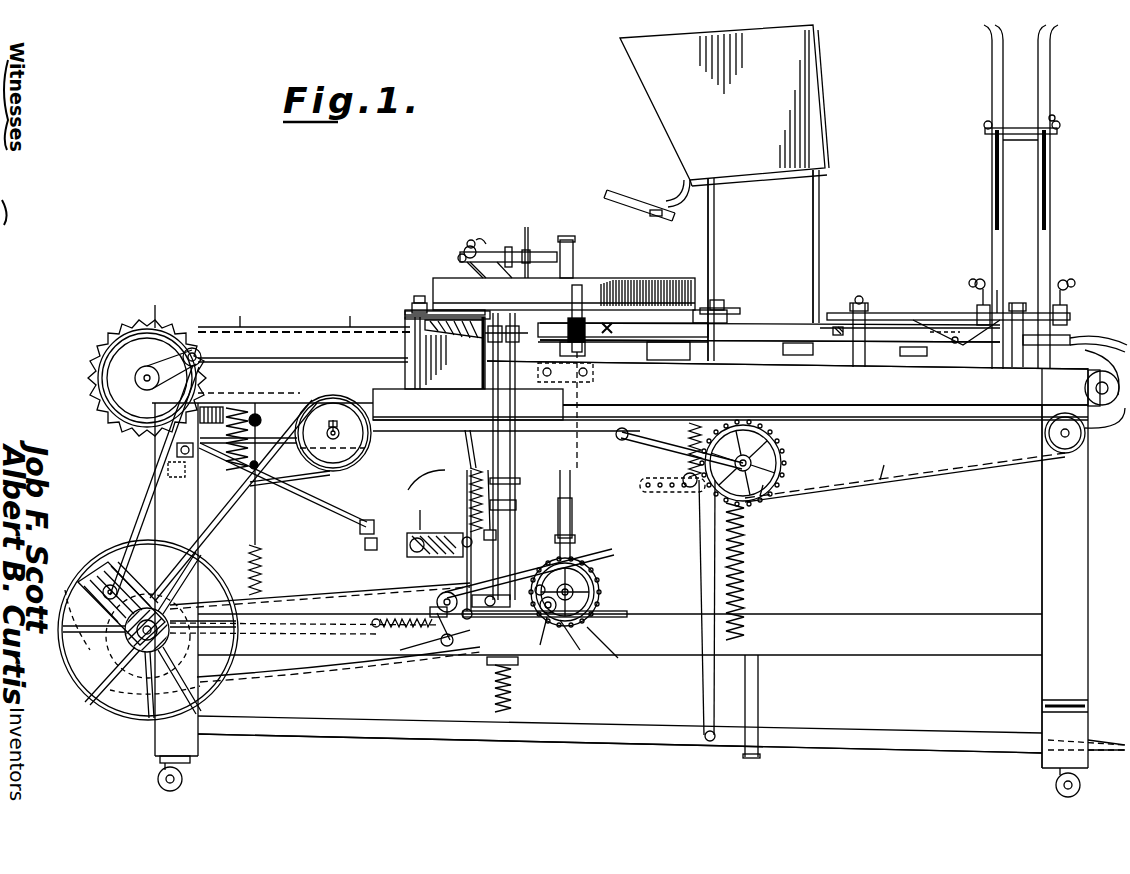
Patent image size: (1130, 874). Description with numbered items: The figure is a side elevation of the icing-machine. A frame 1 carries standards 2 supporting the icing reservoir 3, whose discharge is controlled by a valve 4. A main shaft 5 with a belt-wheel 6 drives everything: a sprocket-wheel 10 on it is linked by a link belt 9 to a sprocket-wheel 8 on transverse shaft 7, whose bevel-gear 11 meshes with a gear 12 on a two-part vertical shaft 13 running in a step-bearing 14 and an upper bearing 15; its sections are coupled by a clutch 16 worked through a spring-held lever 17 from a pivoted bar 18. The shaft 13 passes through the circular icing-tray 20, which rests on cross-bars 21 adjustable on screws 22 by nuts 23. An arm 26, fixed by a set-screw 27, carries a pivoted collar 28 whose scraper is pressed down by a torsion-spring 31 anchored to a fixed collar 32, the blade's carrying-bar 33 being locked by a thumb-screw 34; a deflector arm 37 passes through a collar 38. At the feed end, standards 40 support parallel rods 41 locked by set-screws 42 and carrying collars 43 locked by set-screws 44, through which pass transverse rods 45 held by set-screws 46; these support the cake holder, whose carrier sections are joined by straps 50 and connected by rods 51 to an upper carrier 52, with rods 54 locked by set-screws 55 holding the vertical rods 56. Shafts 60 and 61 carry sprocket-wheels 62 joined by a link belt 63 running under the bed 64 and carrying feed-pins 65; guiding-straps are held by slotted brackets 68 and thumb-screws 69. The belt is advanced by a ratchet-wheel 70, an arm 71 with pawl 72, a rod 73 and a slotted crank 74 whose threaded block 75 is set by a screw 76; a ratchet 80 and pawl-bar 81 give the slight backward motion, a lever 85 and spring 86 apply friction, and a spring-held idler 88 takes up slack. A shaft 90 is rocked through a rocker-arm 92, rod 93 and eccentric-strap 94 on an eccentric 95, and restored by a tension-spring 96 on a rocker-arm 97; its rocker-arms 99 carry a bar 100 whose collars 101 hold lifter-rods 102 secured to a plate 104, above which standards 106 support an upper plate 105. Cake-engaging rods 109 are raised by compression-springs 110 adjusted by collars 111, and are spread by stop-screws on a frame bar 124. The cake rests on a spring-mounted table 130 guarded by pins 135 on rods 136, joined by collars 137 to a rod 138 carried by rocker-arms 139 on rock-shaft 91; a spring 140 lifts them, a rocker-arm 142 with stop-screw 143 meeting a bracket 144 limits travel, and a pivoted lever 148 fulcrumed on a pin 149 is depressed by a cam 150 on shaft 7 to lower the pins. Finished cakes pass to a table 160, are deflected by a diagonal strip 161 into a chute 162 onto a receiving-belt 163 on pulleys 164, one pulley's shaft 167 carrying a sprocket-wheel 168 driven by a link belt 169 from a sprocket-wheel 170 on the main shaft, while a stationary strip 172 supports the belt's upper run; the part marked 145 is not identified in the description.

The frame 1 is at (1070, 556).
The standards 2 is at (714, 243).
The reservoir 3 is at (724, 105).
The valve 4 is at (676, 196).
The shaft 5 is at (125, 648).
The belt-wheel 6 is at (72, 590).
The shaft 7 is at (590, 592).
The sprocket-wheel 8 is at (585, 566).
The link belt 9 is at (306, 600).
The sprocket-wheel 10 is at (146, 606).
The bevel-gear 11 is at (596, 602).
The bevel-gear 12 is at (590, 575).
The two-part shaft 13 is at (574, 524).
The step-bearing 14 is at (613, 653).
The upper bearing 15 is at (583, 378).
The clutch 16 is at (560, 522).
The spring-held lever 17 is at (680, 582).
The pivoted bar 18 is at (603, 733).
The circular tray 20 is at (564, 281).
The cross-bars 21 is at (408, 302).
The screws 22 is at (416, 296).
The nuts 23 is at (408, 312).
The arm 26 is at (460, 256).
The set-screw 27 is at (575, 248).
The collar 28 is at (468, 242).
The torsion-spring 31 is at (496, 252).
The fixed collar 32 is at (526, 248).
The carrying-bar 33 is at (480, 270).
The thumb-screw 34 is at (480, 240).
The arm 37 is at (560, 244).
The collar 38 is at (514, 268).
The standards 40 is at (856, 368).
The parallel rods 41 is at (888, 320).
The set-screws 42 is at (864, 302).
The collars 43 is at (977, 308).
The set-screws 44 is at (1070, 318).
The transverse rods 45 is at (975, 286).
The set-screws 46 is at (972, 279).
The straps 50 is at (1030, 290).
The rods 51 is at (1028, 182).
The upper sectional carrier 52 is at (1012, 134).
The rods 54 is at (980, 127).
The set-screws 55 is at (1054, 118).
The vertical rods 56 is at (1040, 53).
The transverse shaft 60 is at (1086, 388).
The transverse shaft 61 is at (112, 395).
The sprocket-wheels 62 is at (1115, 436).
The link belt 63 is at (916, 470).
The bed or table 64 is at (760, 340).
The pins 65 is at (980, 470).
The slotted brackets 68 is at (608, 334).
The thumb-screws 69 is at (837, 326).
The ratchet-wheel 70 is at (134, 372).
The arm 71 is at (157, 307).
The pawl 72 is at (192, 347).
The rod 73 is at (148, 493).
The crank 74 is at (96, 606).
The threaded block 75 is at (100, 640).
The screw 76 is at (106, 584).
The ratchet 80 is at (112, 420).
The pawl-bar 81 is at (212, 468).
The lever 85 is at (228, 406).
The spring 86 is at (266, 562).
The idler 88 is at (757, 463).
The shaft 90 is at (437, 600).
The rock-shaft 91 is at (422, 554).
The rocker-arm 92 is at (443, 660).
The rod 93 is at (326, 668).
The eccentric-strap 94 is at (80, 680).
The eccentric 95 is at (160, 672).
The tension-spring 96 is at (407, 636).
The rocker-arm 97 is at (396, 617).
The rocker-arms 99 is at (487, 640).
The transversely-disposed bar 100 is at (495, 610).
The collars 101 is at (524, 582).
The lifter-rods 102 is at (529, 570).
The plate 104 is at (550, 536).
The plate 105 is at (453, 360).
The rods or standards 106 is at (504, 345).
The cake-engaging rods 109 is at (515, 448).
The helical compression-springs 110 is at (516, 506).
The collar 111 is at (525, 485).
The bar 124 is at (468, 404).
The cake-receiving table 130 is at (572, 300).
The guard-pins 135 is at (453, 336).
The vertically-disposed rods 136 is at (470, 448).
The collars 137 is at (486, 510).
The transverse rod 138 is at (484, 533).
The rocker-arms 139 is at (408, 490).
The spring 140 is at (470, 494).
The rocker-arm 142 is at (418, 512).
The stop-screw 143 is at (362, 530).
The bracket 144 is at (366, 548).
The roller 145 is at (433, 558).
The pivoted lever 148 is at (540, 645).
The pin 149 is at (620, 617).
The cam 150 is at (580, 650).
The cake-receiving table 160 is at (303, 350).
The diagonal strip 161 is at (406, 316).
The chute 162 is at (428, 378).
The receiving-belt 163 is at (665, 405).
The pulleys 164 is at (1064, 453).
The shaft or stud 167 is at (340, 436).
The sprocket-wheel 168 is at (290, 479).
The link belt 169 is at (313, 516).
The sprocket-wheel 170 is at (190, 590).
The stationary strip 172 is at (968, 412).